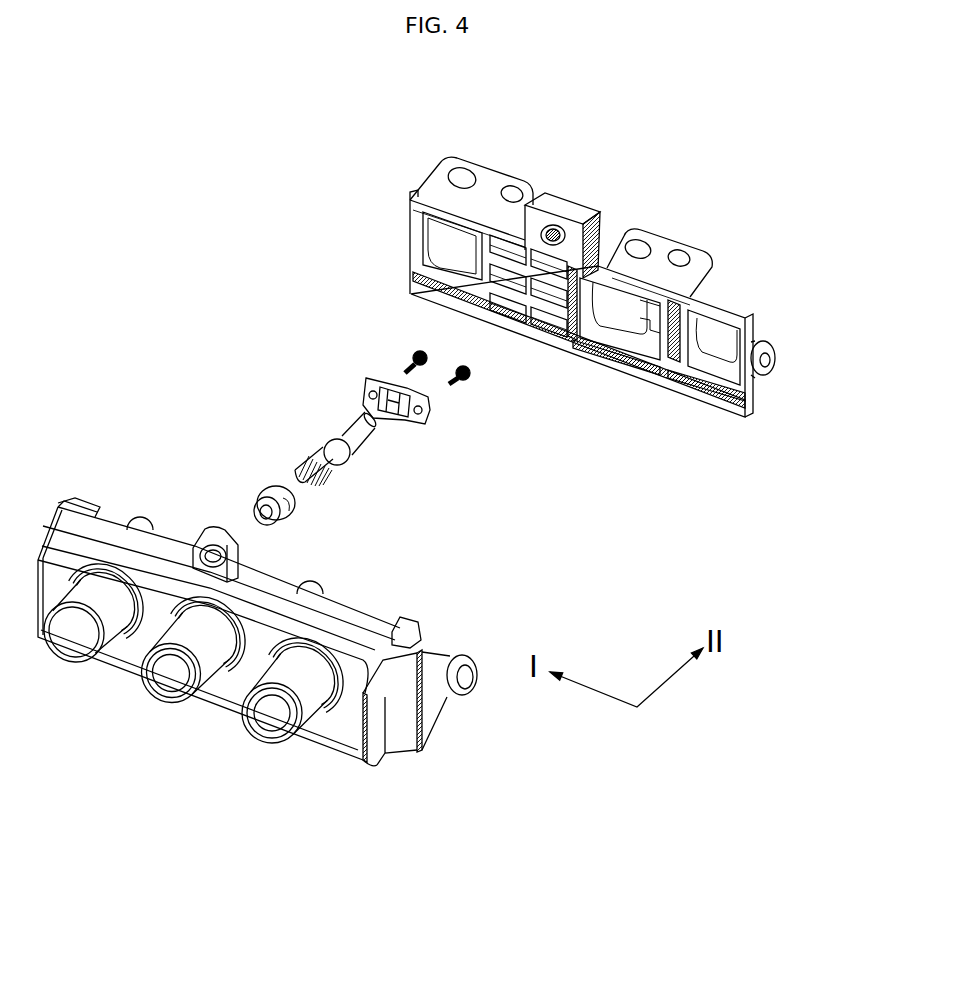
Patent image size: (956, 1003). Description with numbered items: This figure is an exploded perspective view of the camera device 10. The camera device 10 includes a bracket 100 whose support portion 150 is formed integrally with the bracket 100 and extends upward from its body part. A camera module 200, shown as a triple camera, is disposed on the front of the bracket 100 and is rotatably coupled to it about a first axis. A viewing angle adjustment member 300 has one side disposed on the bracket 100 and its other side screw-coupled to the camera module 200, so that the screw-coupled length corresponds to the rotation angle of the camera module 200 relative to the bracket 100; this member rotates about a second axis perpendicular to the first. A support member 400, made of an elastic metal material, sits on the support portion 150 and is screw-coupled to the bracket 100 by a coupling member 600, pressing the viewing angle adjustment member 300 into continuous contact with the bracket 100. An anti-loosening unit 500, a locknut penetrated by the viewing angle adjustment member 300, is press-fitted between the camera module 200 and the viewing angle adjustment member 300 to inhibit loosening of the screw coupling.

The camera device 10 is at (137, 189).
The bracket 100 is at (762, 343).
The support portion 150 is at (560, 203).
The camera module 200 is at (350, 727).
The viewing angle adjustment member 300 is at (312, 457).
The support member 400 is at (368, 378).
The anti-loosening unit 500 is at (253, 498).
The coupling member 600 is at (470, 381).